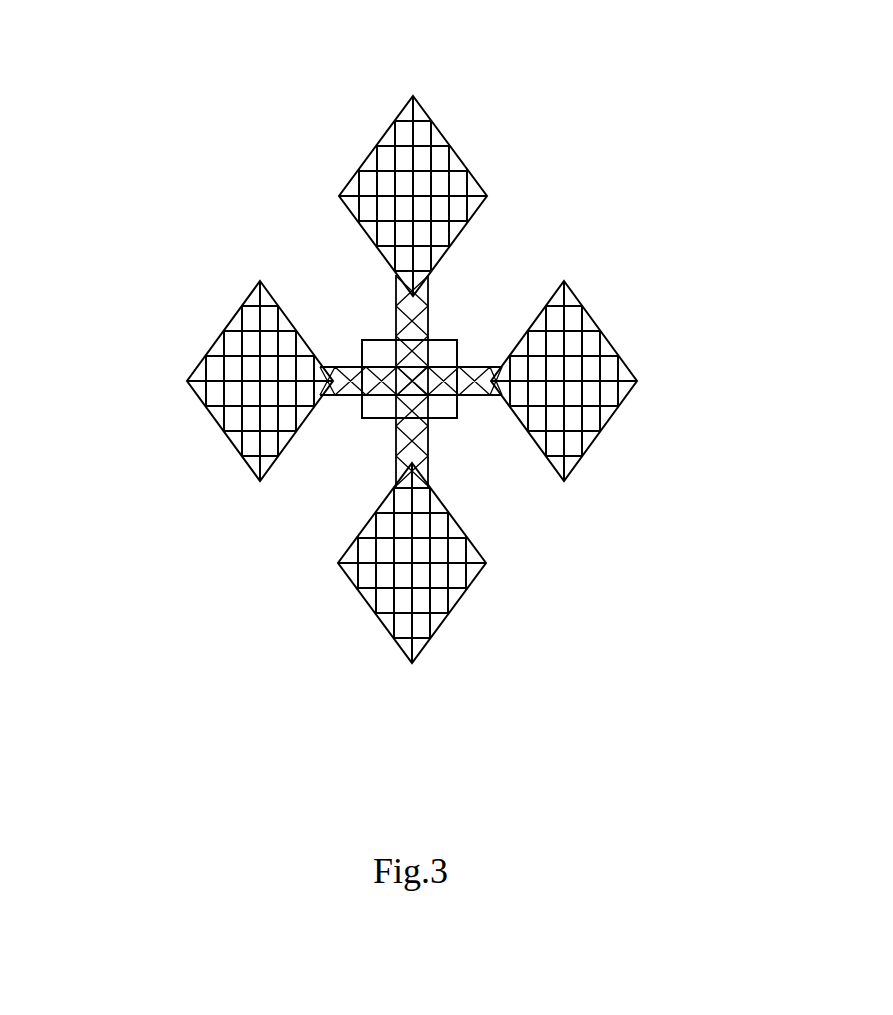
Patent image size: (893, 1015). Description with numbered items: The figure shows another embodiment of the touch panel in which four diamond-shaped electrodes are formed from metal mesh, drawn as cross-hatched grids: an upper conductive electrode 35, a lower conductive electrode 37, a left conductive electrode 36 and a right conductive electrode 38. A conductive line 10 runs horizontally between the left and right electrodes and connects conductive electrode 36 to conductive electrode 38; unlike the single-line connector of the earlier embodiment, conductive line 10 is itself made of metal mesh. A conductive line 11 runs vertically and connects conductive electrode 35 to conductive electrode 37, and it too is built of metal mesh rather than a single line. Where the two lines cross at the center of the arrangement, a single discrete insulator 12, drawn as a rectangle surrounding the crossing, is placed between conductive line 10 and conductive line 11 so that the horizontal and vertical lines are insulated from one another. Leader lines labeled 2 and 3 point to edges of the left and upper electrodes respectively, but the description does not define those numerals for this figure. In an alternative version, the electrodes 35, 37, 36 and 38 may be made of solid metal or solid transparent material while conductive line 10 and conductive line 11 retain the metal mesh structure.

The first conductive pattern 2 is at (180, 342).
The second conductive pattern 3 is at (445, 130).
The conductive line 10 is at (480, 400).
The conductive line 11 is at (387, 313).
The insulator 12 is at (453, 343).
The conductive electrode 35 is at (460, 162).
The conductive electrode 36 is at (227, 433).
The conductive electrode 37 is at (483, 645).
The conductive electrode 38 is at (630, 407).